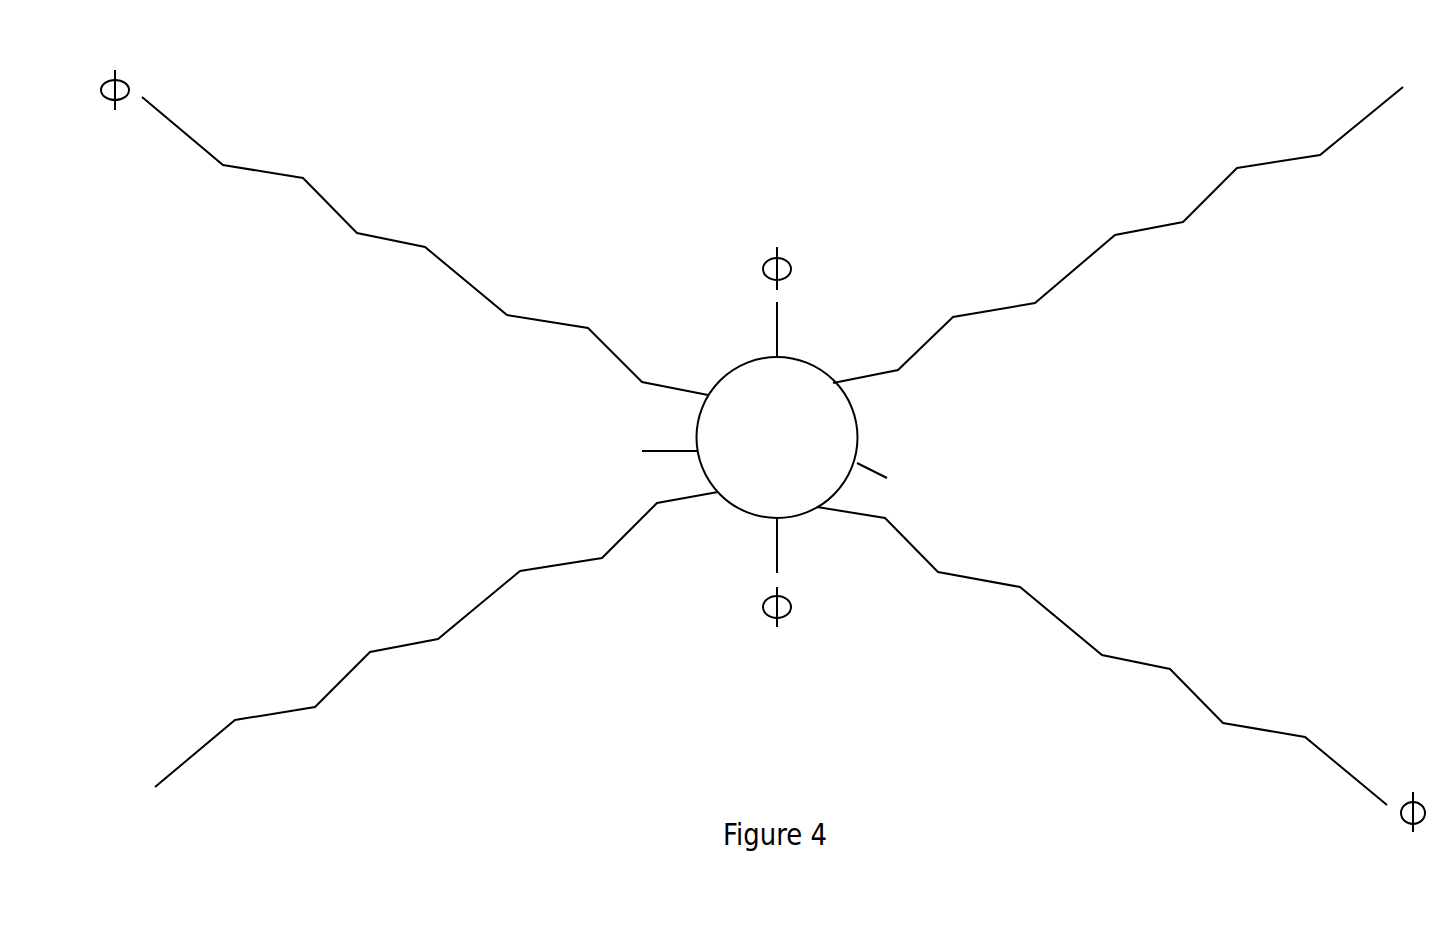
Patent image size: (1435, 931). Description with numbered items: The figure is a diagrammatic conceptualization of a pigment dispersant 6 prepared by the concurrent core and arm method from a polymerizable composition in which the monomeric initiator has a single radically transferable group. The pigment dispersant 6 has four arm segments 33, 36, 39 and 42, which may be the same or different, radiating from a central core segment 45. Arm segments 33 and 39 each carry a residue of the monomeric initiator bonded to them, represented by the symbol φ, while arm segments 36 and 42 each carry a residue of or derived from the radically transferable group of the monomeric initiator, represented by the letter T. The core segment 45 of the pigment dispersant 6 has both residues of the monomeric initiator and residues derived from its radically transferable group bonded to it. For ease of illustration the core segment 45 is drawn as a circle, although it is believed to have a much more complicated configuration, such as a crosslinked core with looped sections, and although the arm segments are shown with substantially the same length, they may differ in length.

The pigment dispersant 6 is at (232, 478).
The arm segment 33 is at (1202, 205).
The arm segment 36 is at (1188, 687).
The arm segment 39 is at (353, 672).
The arm segment 42 is at (337, 213).
The core segment 45 is at (858, 437).